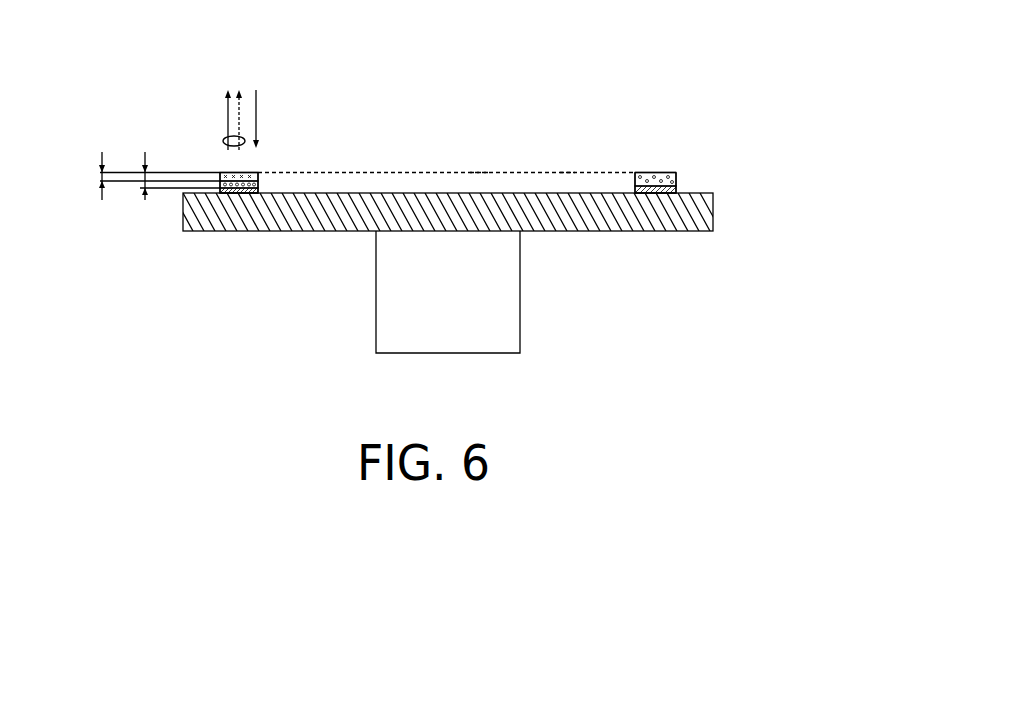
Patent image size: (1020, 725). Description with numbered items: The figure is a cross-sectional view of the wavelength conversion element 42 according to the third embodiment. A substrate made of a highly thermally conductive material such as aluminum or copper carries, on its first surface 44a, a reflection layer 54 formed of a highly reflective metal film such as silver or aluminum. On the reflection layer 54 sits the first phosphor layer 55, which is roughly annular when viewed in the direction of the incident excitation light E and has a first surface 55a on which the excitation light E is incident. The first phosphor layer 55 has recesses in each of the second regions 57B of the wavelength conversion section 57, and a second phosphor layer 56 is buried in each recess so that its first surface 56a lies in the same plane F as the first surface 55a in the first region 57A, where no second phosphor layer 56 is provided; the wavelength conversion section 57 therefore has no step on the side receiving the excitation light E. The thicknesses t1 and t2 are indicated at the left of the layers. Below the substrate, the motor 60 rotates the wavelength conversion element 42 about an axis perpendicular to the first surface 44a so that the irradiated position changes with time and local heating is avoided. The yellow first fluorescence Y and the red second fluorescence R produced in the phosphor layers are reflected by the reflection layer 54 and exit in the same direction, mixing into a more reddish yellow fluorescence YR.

The wavelength conversion element 42 is at (438, 122).
The first surface 44a is at (522, 193).
The reflection layer 54 is at (270, 193).
The first phosphor layer 55 is at (265, 182).
The first surface 55a is at (657, 172).
The second phosphor layer 56 is at (247, 172).
The first surface 56a is at (260, 173).
The wavelength conversion section 57 is at (480, 172).
The first region 57A is at (646, 150).
The second region 57B is at (195, 87).
The motor 60 is at (512, 307).
The plane F is at (567, 155).
The first fluorescence Y is at (225, 118).
The second fluorescence R is at (252, 118).
The excitation light E is at (262, 115).
The yellow fluorescence YR is at (223, 143).
The thickness t1 is at (144, 161).
The thickness t2 is at (101, 161).